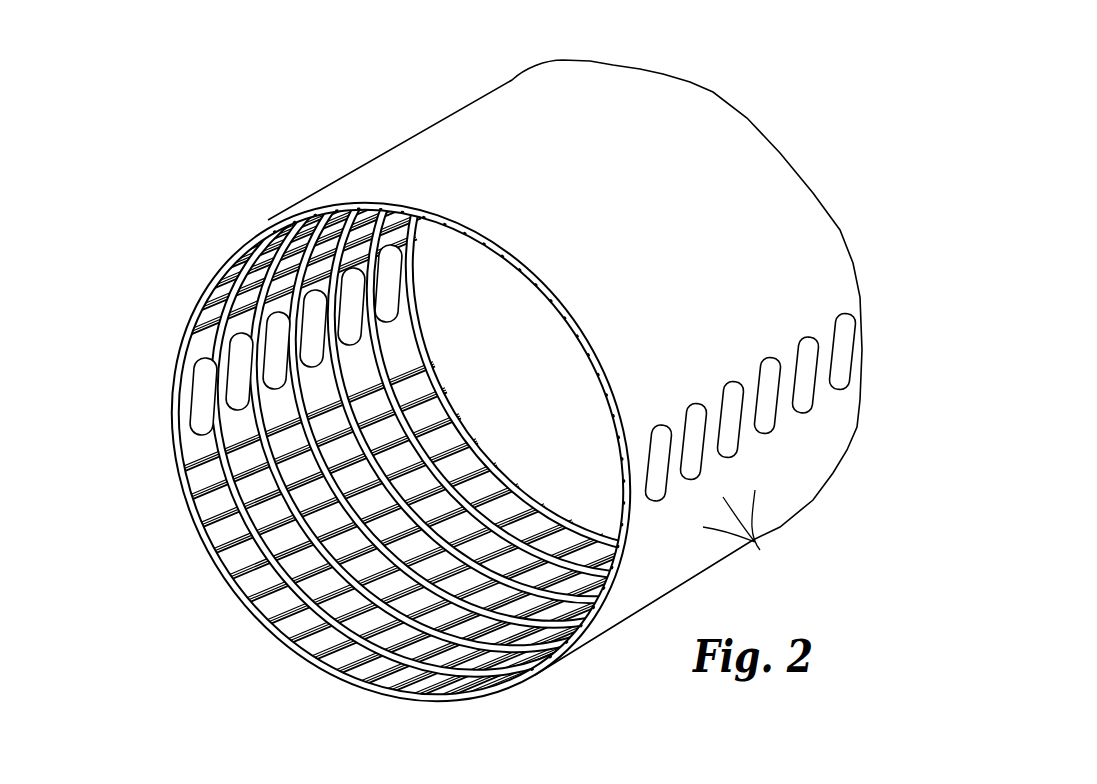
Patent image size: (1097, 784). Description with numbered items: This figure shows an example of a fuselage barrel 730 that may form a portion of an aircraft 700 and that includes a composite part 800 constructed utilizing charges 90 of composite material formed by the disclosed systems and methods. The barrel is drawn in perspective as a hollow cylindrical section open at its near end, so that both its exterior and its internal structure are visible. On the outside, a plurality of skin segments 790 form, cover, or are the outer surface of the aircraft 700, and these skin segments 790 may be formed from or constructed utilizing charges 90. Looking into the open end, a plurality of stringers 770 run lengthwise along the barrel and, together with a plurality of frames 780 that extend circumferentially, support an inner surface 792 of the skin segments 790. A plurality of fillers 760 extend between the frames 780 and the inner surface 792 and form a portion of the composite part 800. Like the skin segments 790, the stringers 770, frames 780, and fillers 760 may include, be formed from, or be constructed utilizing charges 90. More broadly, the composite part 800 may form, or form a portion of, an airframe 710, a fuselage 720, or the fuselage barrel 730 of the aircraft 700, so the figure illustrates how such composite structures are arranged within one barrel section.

The aircraft 700 is at (142, 95).
The composite part 800 is at (142, 158).
The airframe 710 is at (142, 226).
The fuselage 720 is at (142, 291).
The charge 90 is at (262, 162).
The fuselage barrel 730 is at (354, 88).
The fillers 760 is at (252, 409).
The stringers 770 is at (306, 667).
The frames 780 is at (372, 676).
The inner surface 792 is at (247, 532).
The skin segments 790 is at (760, 550).